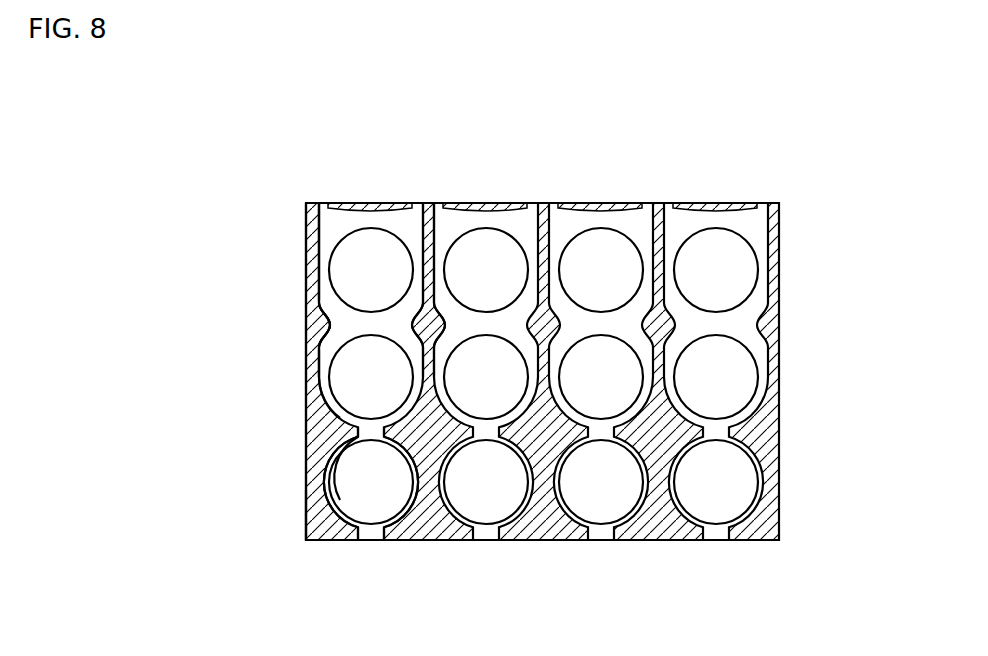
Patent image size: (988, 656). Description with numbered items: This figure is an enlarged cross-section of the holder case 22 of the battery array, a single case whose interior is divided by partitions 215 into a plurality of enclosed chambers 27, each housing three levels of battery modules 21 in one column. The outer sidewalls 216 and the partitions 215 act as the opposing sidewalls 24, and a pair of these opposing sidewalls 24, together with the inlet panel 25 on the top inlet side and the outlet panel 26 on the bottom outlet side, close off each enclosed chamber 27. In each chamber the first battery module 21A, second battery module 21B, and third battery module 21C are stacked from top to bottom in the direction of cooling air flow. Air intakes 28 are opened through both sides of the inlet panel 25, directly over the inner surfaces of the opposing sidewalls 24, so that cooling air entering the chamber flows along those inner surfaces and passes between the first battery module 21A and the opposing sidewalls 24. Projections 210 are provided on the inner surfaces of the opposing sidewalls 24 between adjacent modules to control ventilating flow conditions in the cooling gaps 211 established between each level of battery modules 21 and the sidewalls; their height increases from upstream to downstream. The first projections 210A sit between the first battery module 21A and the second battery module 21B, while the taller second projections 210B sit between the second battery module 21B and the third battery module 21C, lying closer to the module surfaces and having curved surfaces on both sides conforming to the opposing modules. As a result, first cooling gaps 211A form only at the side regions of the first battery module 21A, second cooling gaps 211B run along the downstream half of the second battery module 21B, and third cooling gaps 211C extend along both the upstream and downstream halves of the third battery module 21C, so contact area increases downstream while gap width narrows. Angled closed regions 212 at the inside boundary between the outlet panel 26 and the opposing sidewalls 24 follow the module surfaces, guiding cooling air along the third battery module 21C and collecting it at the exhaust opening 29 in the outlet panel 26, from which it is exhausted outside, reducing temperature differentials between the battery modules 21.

The holder case 22 is at (312, 126).
The inlet panel 25 is at (363, 203).
The battery modules 21 is at (640, 128).
The first battery module 21A is at (397, 263).
The second battery module 21B is at (403, 368).
The third battery module 21C is at (397, 467).
The air intakes 28 is at (322, 202).
The opposing sidewalls 24 is at (299, 296).
The partitions 215 is at (428, 203).
The sidewalls 216 is at (313, 259).
The enclosed chamber 27 is at (322, 232).
The cooling gaps 211 is at (183, 298).
The first cooling gaps 211A is at (322, 292).
The second cooling gaps 211B is at (320, 397).
The third cooling gaps 211C is at (320, 460).
The angled closed regions 212 is at (323, 527).
The outlet panel 26 is at (343, 542).
The exhaust opening 29 is at (372, 545).
The projections 210 is at (537, 590).
The first projections 210A is at (437, 510).
The second projections 210B is at (325, 320).